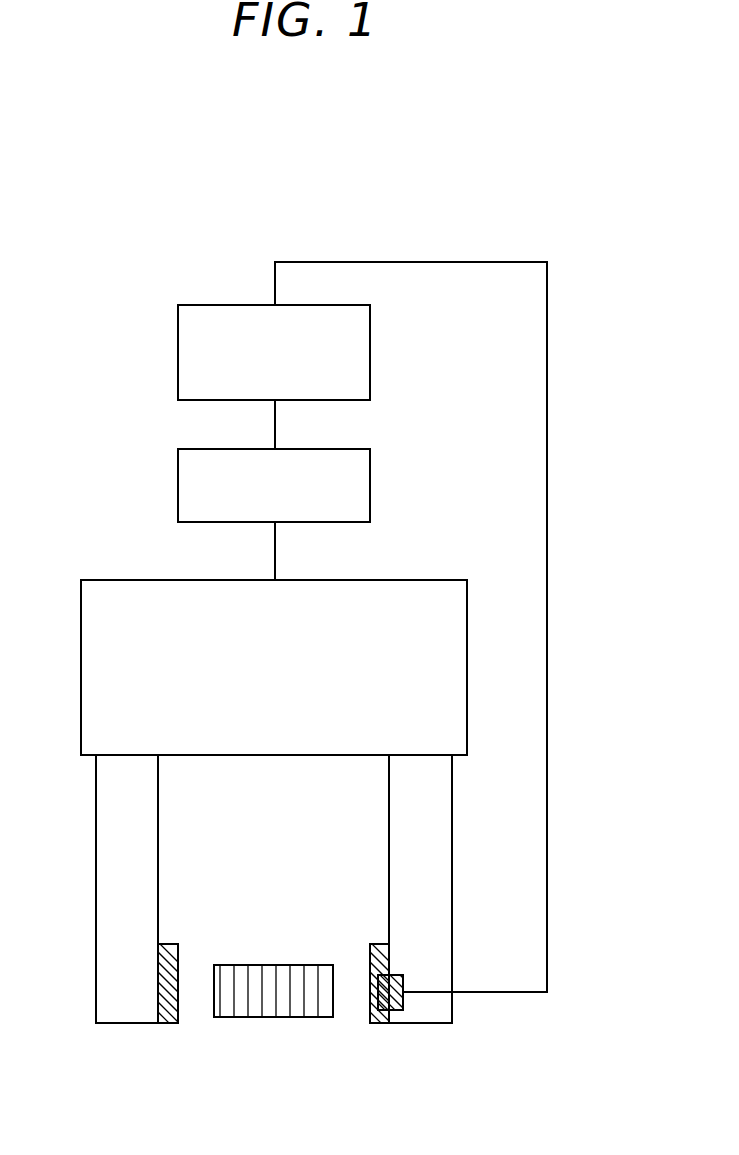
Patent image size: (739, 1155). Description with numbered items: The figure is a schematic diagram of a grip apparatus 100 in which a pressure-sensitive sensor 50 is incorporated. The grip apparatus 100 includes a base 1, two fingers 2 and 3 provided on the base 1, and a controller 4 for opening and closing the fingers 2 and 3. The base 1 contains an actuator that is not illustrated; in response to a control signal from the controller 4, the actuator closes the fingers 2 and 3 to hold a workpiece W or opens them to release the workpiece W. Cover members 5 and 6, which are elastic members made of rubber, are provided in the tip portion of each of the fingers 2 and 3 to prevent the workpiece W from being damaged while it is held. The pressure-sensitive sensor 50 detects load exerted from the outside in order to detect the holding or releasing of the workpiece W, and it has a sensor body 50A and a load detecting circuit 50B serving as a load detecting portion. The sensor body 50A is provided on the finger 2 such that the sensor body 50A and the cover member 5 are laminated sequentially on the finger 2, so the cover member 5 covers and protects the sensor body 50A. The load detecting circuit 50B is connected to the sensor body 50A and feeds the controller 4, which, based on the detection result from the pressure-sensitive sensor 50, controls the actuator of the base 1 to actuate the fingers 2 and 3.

The grip apparatus 100 is at (531, 135).
The pressure-sensitive sensor 50 is at (460, 241).
The sensor body 50A is at (398, 1000).
The load detecting circuit 50B is at (178, 339).
The controller 4 is at (178, 478).
The base 1 is at (81, 628).
The finger 2 is at (389, 871).
The finger 3 is at (96, 881).
The cover member 5 is at (380, 1024).
The cover member 6 is at (170, 1024).
The workpiece W is at (265, 987).